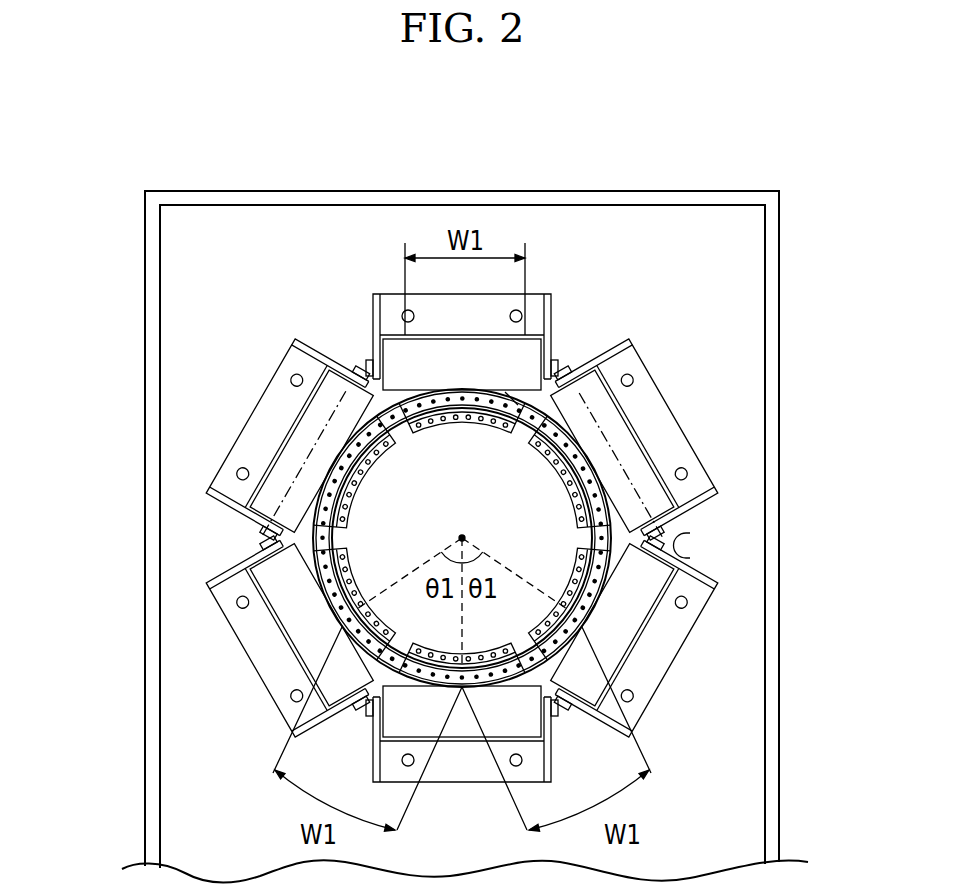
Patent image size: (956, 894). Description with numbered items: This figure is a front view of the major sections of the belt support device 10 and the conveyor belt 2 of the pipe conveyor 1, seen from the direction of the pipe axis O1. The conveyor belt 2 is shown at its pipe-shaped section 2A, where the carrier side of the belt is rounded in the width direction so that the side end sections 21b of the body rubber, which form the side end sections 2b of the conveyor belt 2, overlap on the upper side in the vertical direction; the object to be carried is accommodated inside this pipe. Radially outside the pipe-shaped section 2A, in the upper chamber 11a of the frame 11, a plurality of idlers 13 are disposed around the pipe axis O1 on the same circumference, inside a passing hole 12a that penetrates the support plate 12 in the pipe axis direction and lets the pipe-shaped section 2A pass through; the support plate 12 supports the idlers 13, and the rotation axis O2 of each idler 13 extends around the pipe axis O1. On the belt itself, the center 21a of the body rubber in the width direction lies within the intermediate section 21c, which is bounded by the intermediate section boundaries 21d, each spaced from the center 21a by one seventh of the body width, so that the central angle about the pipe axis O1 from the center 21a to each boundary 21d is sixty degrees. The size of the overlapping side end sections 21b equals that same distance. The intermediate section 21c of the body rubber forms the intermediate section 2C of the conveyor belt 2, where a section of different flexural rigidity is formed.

The pipe conveyor 1 is at (157, 120).
The conveyor belt 2 is at (307, 562).
The pipe-shaped section 2A is at (333, 605).
The side end sections 2b is at (522, 405).
The intermediate section 2C is at (514, 684).
The belt support device 10 is at (740, 191).
The base member 11 is at (147, 533).
The upper chamber 11a is at (734, 266).
The support plate 12 is at (195, 272).
The passing hole 12a is at (686, 547).
The idlers 13 is at (297, 453).
The center 21a is at (463, 665).
The side end sections 21b is at (411, 424).
The intermediate section 21c is at (415, 680).
The intermediate section boundaries 21d is at (355, 610).
The pipe axis O1 is at (460, 536).
The rotation axis O2 is at (318, 435).